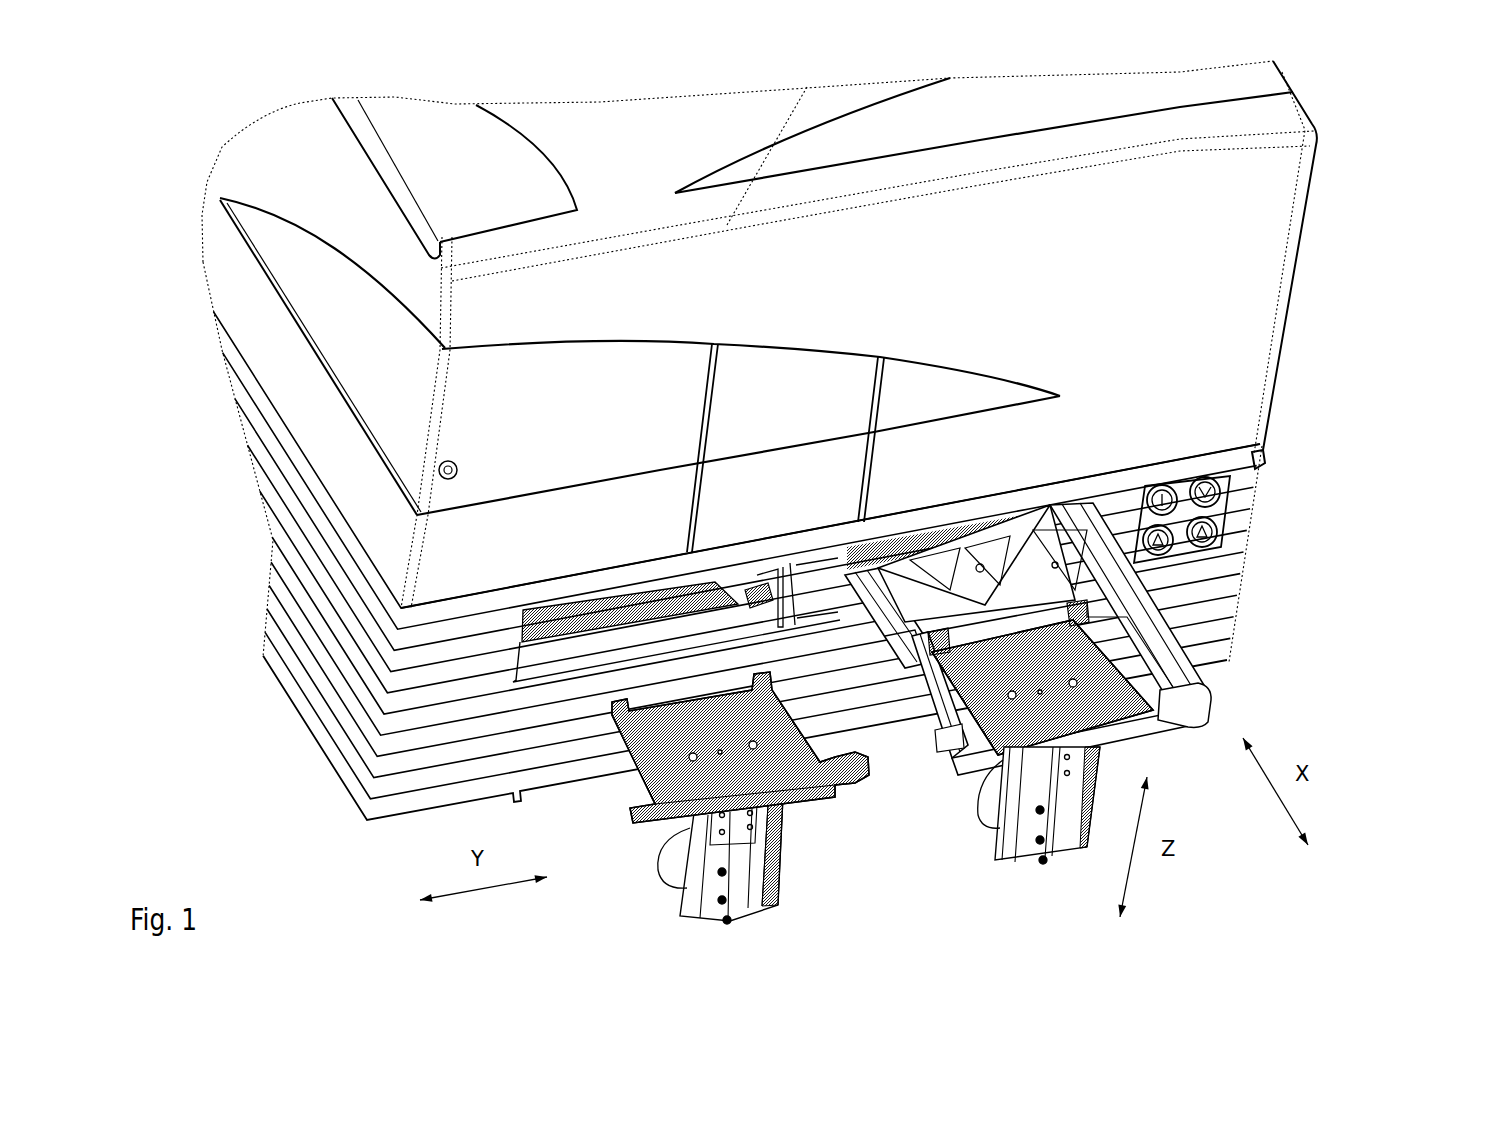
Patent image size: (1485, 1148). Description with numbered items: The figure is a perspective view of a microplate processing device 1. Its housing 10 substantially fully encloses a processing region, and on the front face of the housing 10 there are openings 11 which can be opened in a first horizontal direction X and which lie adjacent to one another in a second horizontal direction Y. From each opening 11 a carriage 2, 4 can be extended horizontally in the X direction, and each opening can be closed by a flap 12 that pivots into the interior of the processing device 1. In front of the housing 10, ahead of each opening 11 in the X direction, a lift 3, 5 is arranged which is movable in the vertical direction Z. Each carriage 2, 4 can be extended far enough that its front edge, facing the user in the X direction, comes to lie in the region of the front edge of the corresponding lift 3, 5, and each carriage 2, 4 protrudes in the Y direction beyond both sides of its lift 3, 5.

The microplate processing device 1 is at (1378, 128).
The housing 10 is at (1243, 377).
The openings 11 is at (554, 640).
The flap 12 is at (599, 630).
The carriage 2 is at (1163, 660).
The lift 3 is at (1023, 725).
The carriage 4 is at (596, 805).
The lift 5 is at (840, 788).